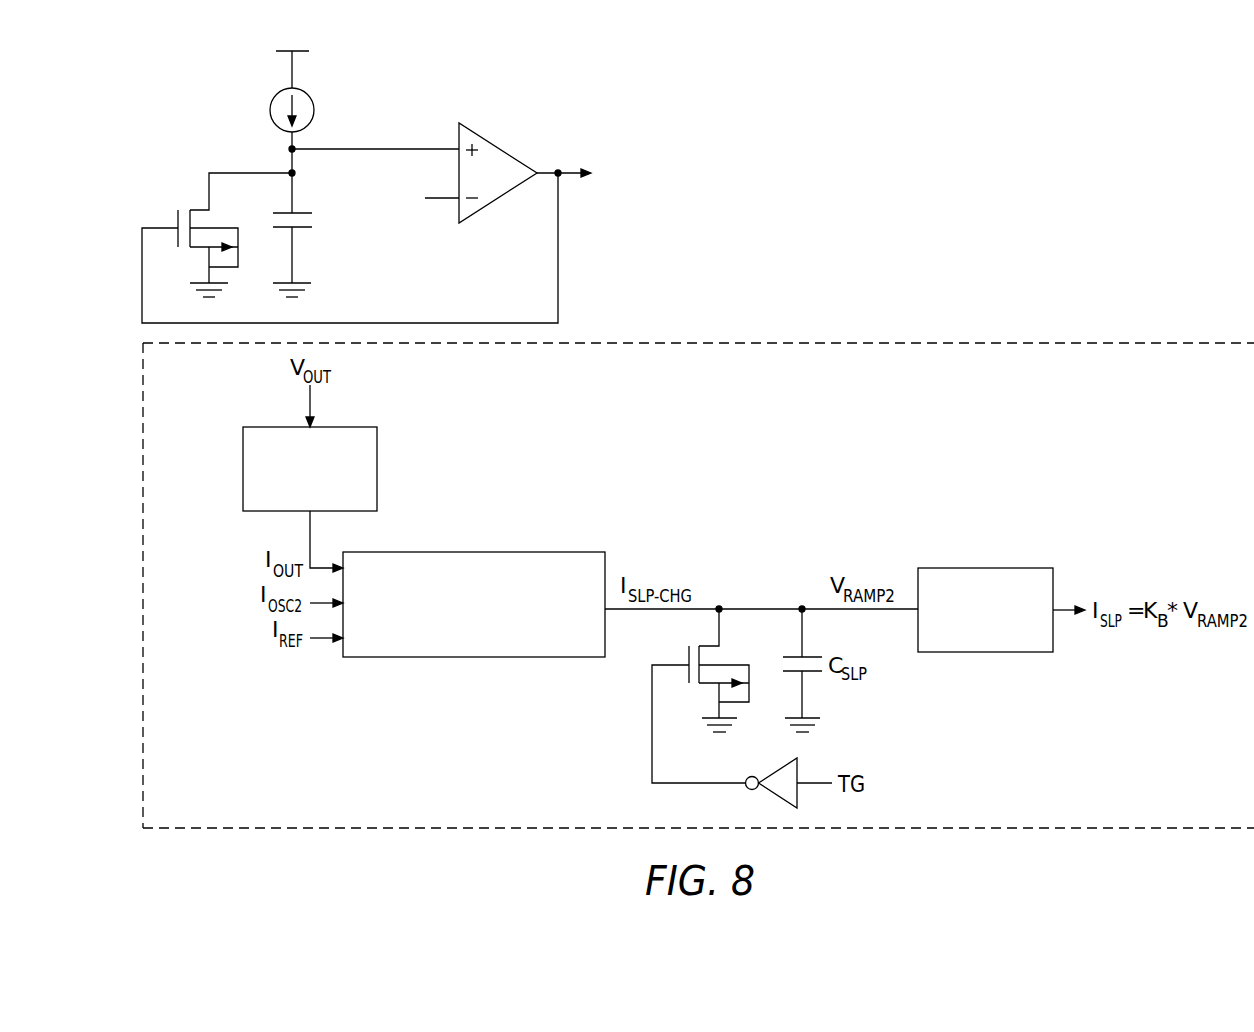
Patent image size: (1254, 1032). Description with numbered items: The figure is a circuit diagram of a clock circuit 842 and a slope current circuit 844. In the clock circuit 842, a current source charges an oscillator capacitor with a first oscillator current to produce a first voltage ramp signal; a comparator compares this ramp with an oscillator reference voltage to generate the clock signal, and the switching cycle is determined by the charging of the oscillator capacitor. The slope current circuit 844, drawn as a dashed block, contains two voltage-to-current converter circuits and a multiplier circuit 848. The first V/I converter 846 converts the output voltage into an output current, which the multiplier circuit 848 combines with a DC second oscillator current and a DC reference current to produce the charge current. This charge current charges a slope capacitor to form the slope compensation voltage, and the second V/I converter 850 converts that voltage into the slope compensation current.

The clock circuit 842 is at (517, 90).
The slope current circuit 844 is at (702, 343).
The first V/I converter 846 is at (377, 468).
The multiplier circuit 848 is at (473, 552).
The second V/I converter 850 is at (985, 568).